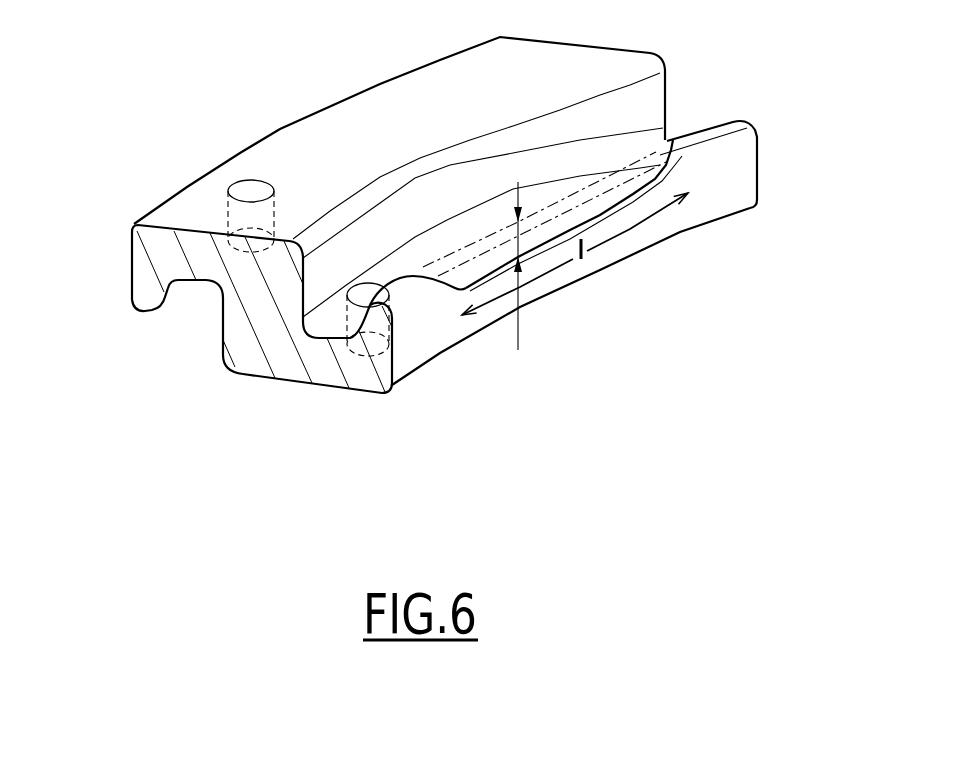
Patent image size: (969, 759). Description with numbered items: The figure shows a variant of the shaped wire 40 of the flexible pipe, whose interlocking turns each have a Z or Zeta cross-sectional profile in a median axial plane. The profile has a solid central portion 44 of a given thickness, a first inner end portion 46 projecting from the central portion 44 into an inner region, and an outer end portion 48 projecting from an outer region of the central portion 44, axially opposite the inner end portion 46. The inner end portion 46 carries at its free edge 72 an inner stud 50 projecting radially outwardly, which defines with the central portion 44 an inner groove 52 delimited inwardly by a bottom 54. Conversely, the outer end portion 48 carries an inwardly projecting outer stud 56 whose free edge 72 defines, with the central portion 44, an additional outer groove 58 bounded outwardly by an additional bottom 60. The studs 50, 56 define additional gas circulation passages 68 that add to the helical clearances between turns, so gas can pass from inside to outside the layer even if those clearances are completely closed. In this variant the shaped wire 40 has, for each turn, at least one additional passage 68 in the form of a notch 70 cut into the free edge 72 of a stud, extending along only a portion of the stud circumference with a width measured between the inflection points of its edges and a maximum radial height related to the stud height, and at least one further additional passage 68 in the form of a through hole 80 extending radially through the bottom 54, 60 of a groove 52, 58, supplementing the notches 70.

The shaped wire 40 is at (447, 238).
The central portion 44 is at (260, 300).
The inner end portion 46 is at (365, 396).
The outer end portion 48 is at (163, 240).
The inner stud 50 is at (378, 323).
The inner groove 52 is at (333, 358).
The bottom 54 is at (340, 353).
The outer stud 56 is at (148, 292).
The outer groove 58 is at (200, 250).
The additional bottom 60 is at (199, 290).
The additional passage 68 is at (237, 140).
The notch 70 is at (460, 257).
The free edge 72 is at (710, 128).
The through hole 80 is at (368, 292).